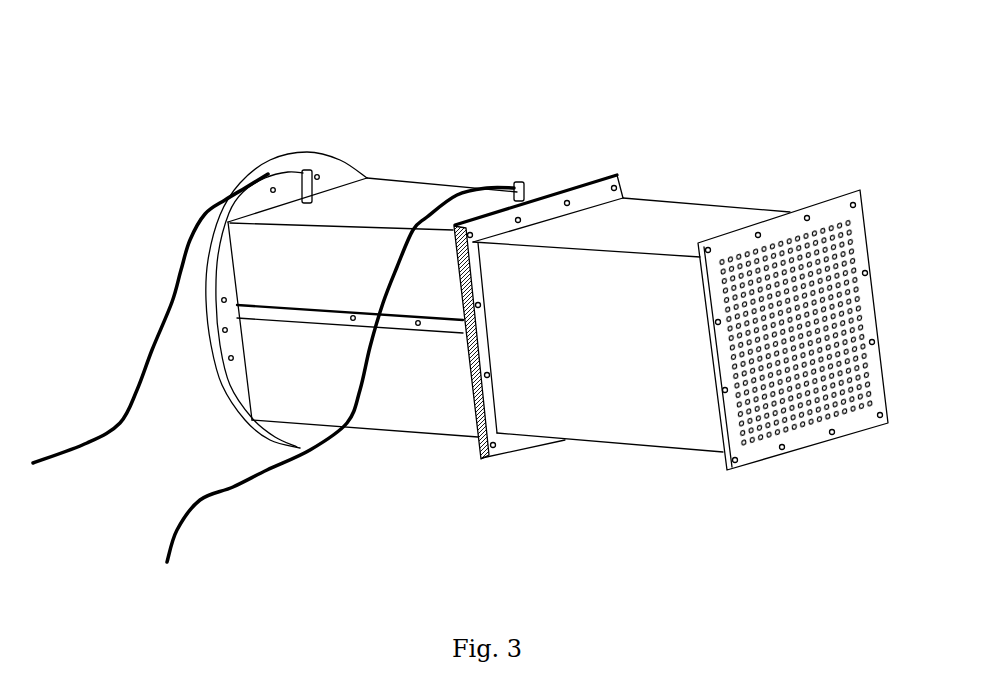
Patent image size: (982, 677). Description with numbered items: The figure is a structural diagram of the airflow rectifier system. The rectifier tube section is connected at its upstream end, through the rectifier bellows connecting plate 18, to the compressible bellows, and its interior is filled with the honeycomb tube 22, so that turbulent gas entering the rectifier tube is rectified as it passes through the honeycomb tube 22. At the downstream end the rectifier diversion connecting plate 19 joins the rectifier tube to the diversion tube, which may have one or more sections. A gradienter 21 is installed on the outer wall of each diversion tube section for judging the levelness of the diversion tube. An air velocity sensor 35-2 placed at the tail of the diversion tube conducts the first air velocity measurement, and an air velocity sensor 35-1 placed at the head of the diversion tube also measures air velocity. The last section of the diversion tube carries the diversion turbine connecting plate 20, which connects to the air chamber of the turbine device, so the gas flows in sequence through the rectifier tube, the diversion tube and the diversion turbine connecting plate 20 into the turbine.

The rectifier bellows connecting plate 18 is at (843, 192).
The rectifier diversion connecting plate 19 is at (483, 460).
The diversion turbine connecting plate 20 is at (282, 155).
The gradienter 21 is at (410, 330).
The honeycomb tube 22 is at (723, 452).
The air velocity sensor 35-1 is at (303, 173).
The air velocity sensor 35-2 is at (517, 183).